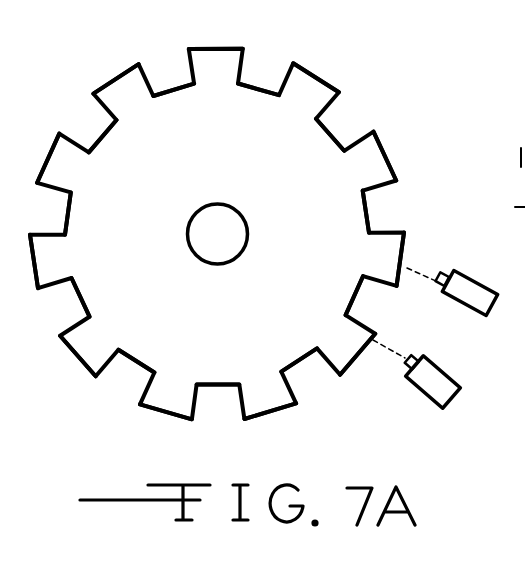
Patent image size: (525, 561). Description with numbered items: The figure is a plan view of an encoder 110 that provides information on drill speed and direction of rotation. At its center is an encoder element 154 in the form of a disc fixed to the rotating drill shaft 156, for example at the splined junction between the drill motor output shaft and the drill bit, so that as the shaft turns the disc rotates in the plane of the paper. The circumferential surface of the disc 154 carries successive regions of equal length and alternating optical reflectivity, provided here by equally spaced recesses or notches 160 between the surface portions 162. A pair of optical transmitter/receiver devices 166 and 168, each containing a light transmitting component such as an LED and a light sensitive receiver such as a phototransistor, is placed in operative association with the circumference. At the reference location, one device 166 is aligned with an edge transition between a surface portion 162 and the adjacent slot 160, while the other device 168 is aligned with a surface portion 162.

The encoder 110 is at (406, 432).
The encoder element 154 is at (292, 163).
The drill shaft 156 is at (217, 202).
The recesses or notches 160 is at (101, 133).
The surface portions 162 is at (54, 144).
The optical transmitter/receiver device 166 is at (432, 401).
The optical transmitter/receiver device 168 is at (465, 312).